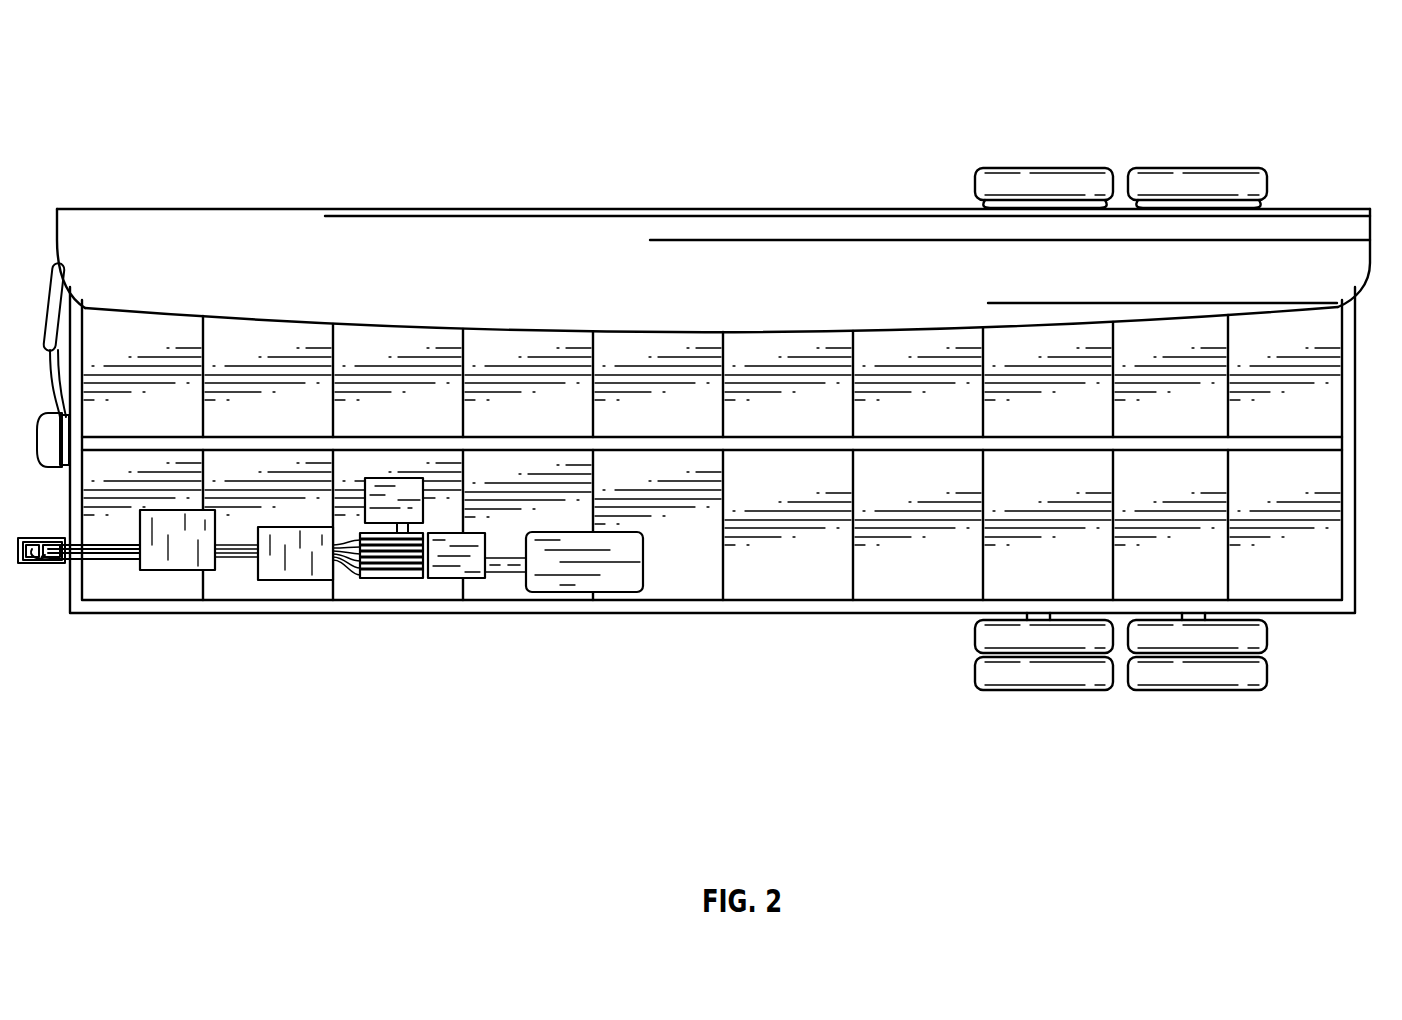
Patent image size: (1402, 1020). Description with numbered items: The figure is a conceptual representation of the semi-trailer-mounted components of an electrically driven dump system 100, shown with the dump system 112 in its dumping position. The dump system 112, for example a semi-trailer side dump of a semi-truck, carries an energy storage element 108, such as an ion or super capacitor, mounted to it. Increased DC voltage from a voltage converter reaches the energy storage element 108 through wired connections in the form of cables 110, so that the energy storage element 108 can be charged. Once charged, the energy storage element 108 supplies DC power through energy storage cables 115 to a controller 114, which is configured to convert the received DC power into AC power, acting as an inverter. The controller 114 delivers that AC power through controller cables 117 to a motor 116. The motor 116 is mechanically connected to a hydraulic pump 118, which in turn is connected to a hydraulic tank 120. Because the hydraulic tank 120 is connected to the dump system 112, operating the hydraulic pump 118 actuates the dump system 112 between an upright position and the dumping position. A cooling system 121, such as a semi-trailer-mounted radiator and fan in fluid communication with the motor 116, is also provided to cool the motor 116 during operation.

The electrically driven dump system 100 is at (306, 100).
The energy storage element 108 is at (183, 568).
The cables 110 is at (53, 563).
The dump system 112 is at (852, 607).
The controller 114 is at (302, 572).
The energy storage cables 115 is at (237, 557).
The motor 116 is at (392, 575).
The controller cables 117 is at (342, 577).
The hydraulic pump 118 is at (455, 570).
The hydraulic tank 120 is at (593, 568).
The cooling system 121 is at (411, 497).